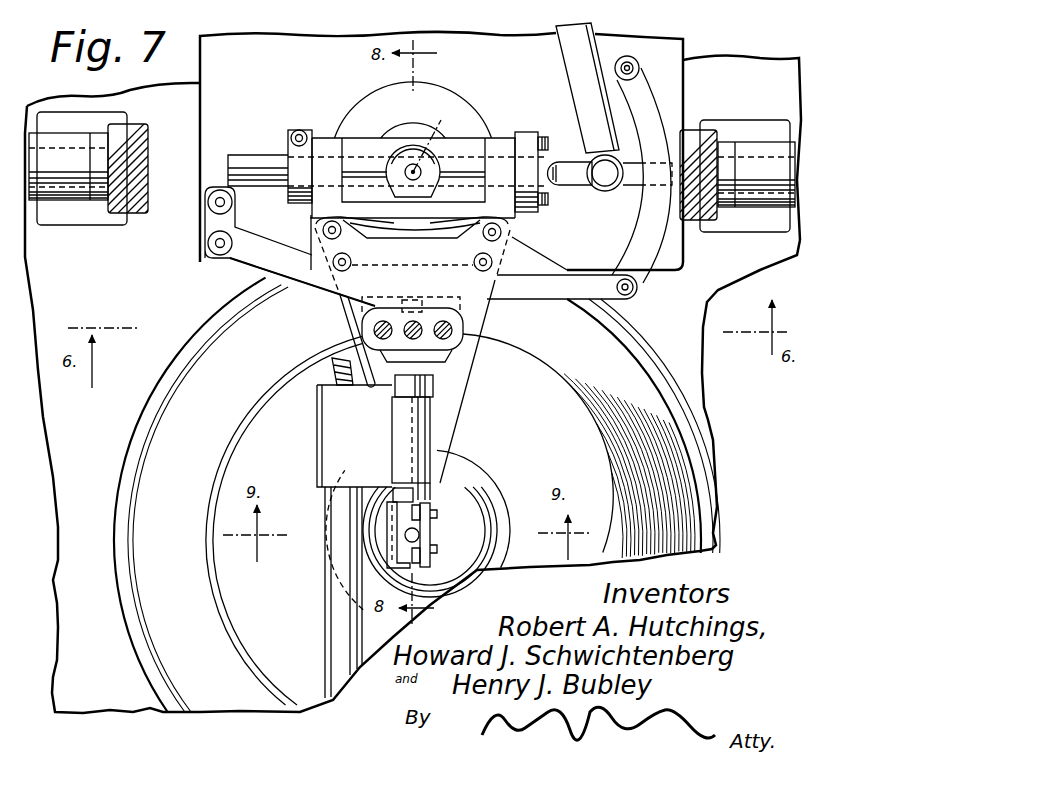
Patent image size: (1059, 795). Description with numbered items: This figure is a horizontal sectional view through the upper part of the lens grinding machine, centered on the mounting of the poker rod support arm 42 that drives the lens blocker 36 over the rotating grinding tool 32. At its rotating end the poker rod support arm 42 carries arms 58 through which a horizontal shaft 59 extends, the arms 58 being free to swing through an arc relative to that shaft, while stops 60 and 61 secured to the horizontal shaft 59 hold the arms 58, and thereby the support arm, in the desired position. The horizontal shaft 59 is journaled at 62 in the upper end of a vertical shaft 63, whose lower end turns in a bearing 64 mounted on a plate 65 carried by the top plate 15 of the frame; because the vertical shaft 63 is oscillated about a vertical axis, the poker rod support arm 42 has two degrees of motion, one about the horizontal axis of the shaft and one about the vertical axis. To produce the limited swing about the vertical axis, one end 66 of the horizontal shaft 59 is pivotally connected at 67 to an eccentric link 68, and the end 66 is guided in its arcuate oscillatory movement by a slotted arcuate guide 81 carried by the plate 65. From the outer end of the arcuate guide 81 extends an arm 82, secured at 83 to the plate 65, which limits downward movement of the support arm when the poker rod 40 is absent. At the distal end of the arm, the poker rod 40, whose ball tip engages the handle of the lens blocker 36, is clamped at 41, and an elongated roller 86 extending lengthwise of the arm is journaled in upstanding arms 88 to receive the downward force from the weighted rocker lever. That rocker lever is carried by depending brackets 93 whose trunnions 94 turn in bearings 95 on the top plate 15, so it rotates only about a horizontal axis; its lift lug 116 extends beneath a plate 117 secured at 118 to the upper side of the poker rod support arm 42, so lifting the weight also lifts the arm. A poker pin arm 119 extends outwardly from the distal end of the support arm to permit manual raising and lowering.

The top plate 15 is at (740, 63).
The grinding tool 32 is at (462, 456).
The lens blocker 36 is at (444, 502).
The poker rod 40 is at (414, 535).
The clamp 41 is at (426, 540).
The poker rod support arm 42 is at (462, 365).
The arms 58 is at (337, 143).
The horizontal shaft 59 is at (250, 157).
The stop 60 is at (301, 130).
The stop 61 is at (527, 136).
The journal 62 is at (429, 137).
The vertical shaft 63 is at (410, 147).
The bearing 64 is at (386, 137).
The plate 65 is at (670, 50).
The end of horizontal shaft 66 is at (577, 176).
The pivotal connection 67 is at (607, 177).
The eccentric link 68 is at (590, 38).
The arcuate guide 81 is at (652, 102).
The arm 82 is at (250, 262).
The securing point 83 is at (207, 242).
The elongated roller 86 is at (400, 420).
The upstanding arms 88 is at (433, 387).
The depending brackets 93 is at (147, 133).
The trunnions 94 is at (50, 150).
The bearings 95 is at (64, 202).
The lift lug 116 is at (420, 300).
The plate 117 is at (355, 283).
The securing points 118 is at (340, 237).
The poker pin arm 119 is at (333, 645).